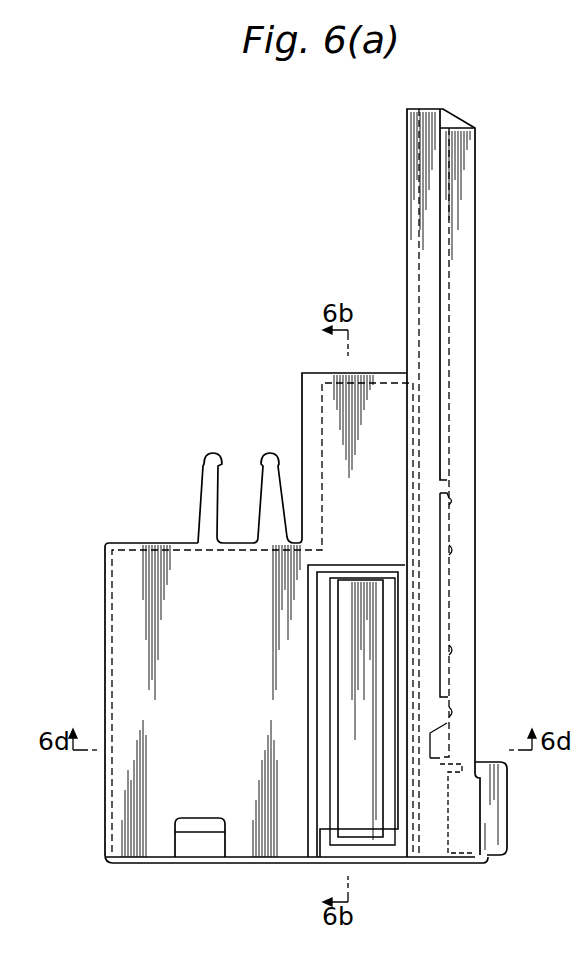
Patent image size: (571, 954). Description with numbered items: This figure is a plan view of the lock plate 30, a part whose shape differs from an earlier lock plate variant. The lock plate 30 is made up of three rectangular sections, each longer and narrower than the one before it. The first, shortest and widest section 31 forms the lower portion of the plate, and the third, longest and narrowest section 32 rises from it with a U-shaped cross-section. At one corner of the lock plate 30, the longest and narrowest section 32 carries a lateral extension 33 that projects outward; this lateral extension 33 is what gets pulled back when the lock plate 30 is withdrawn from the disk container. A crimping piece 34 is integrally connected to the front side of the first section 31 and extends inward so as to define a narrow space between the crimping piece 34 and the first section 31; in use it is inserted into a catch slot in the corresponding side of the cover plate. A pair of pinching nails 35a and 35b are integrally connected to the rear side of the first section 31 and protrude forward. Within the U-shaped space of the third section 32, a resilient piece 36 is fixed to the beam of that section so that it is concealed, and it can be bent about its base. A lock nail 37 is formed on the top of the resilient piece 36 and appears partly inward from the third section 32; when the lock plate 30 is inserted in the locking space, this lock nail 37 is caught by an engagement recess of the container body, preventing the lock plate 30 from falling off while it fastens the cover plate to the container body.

The lock plate 30 is at (257, 299).
The first, shortest and widest section 31 is at (135, 557).
The third, longest and narrowest section 32 is at (467, 347).
The lateral extension 33 is at (497, 815).
The crimping piece 34 is at (197, 843).
The pinching nail 35a is at (208, 475).
The pinching nail 35b is at (270, 460).
The resilient piece 36 is at (453, 583).
The lock nail 37 is at (430, 748).